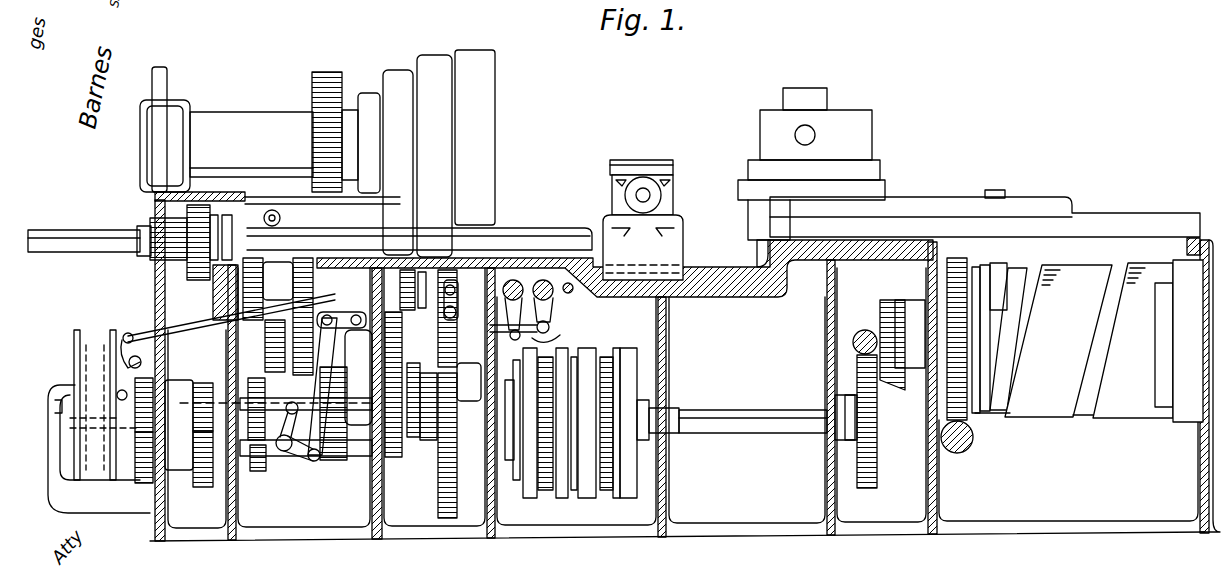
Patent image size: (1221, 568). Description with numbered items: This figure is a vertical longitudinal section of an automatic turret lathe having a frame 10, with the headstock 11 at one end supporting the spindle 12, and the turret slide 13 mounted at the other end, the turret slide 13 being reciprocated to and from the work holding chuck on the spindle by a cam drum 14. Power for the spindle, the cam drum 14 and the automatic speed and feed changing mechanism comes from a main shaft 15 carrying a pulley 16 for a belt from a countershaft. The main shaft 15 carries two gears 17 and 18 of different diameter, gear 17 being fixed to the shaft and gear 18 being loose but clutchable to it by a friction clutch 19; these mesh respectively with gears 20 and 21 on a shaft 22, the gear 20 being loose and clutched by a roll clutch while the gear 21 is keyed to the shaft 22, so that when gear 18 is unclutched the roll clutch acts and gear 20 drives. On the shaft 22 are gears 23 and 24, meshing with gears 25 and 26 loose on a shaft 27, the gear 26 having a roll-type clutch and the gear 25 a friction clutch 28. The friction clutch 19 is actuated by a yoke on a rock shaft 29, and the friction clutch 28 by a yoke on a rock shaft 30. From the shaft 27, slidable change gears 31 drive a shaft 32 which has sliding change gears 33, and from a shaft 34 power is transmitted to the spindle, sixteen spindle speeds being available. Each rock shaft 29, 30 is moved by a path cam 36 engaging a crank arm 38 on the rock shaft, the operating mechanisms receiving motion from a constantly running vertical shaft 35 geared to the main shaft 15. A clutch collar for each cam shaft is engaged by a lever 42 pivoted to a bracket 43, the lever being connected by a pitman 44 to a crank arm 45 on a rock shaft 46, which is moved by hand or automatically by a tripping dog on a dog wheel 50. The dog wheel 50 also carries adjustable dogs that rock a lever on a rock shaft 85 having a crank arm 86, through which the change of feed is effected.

The frame 10 is at (746, 528).
The headstock 11 is at (395, 82).
The spindle 12 is at (260, 130).
The turret slide 13 is at (1028, 205).
The cam drum 14 is at (1024, 373).
The main shaft 15 is at (55, 403).
The pulley 16 is at (74, 333).
The gear 17 is at (203, 385).
The gear 18 is at (180, 400).
The friction clutch 19 is at (75, 428).
The gear 20 is at (200, 488).
The gear 21 is at (142, 485).
The shaft 22 is at (120, 470).
The gear 23 is at (256, 472).
The gear 24 is at (328, 462).
The gear 25 is at (276, 403).
The gear 26 is at (342, 413).
The shaft 27 is at (445, 445).
The friction clutch 28 is at (284, 452).
The rock shaft 29 is at (130, 340).
The rock shaft 30 is at (354, 328).
The slidable change gears 31 is at (428, 442).
The shaft 32 is at (422, 366).
The sliding change gears 33 is at (292, 370).
The shaft 34 is at (278, 316).
The vertical shaft 35 is at (459, 335).
The path cam 36 is at (350, 252).
The crank arm 38 is at (150, 318).
The lever 42 is at (446, 278).
The bracket 43 is at (482, 312).
The pitman 44 is at (607, 251).
The crank arm 45 is at (552, 310).
The rock shaft 46 is at (519, 298).
The dog wheel 50 is at (573, 488).
The rock shaft 85 is at (512, 278).
The crank arm 86 is at (545, 278).